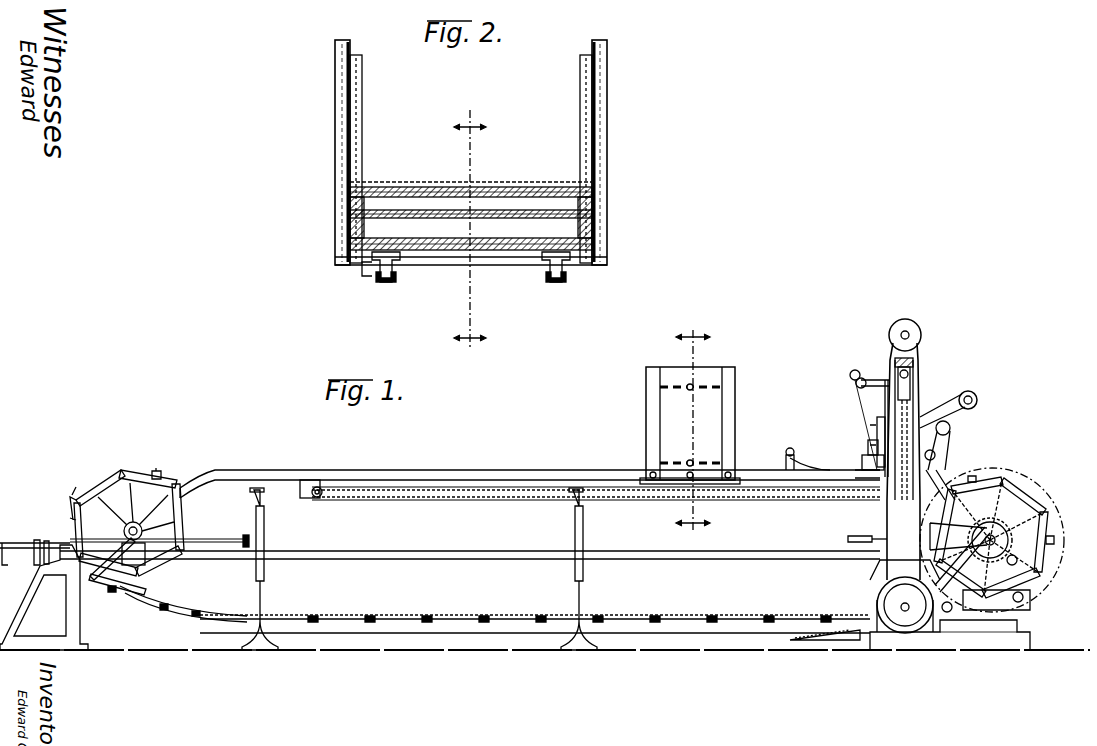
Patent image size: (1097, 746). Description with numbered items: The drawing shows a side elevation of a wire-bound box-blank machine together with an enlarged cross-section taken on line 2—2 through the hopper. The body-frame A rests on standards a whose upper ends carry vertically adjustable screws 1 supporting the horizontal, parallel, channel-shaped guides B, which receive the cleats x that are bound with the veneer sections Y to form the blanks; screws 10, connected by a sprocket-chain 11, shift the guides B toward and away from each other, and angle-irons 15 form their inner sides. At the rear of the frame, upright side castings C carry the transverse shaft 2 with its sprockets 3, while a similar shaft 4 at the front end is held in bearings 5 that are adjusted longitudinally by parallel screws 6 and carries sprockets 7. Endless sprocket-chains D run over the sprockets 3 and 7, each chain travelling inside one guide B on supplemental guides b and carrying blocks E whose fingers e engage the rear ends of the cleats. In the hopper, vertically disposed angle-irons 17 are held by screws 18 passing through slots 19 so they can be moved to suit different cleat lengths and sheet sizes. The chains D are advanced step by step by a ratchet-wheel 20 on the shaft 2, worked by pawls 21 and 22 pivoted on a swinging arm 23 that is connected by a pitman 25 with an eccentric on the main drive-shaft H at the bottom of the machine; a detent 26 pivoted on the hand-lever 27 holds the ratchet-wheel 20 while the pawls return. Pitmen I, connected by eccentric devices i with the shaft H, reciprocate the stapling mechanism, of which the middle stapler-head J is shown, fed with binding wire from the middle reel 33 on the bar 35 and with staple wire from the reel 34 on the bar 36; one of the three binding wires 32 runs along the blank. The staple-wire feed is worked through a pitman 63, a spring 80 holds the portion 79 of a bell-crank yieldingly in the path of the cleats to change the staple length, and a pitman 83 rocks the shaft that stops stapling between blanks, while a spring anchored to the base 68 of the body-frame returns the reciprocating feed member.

In FIG. 1, the vertically adjustable screws 1 is at (262, 497).
In FIG. 1, the transverse shaft 2 is at (1032, 462).
In FIG. 1, the sprockets 3 is at (1030, 585).
In FIG. 2, the front shaft 4 is at (466, 108).
In FIG. 1, the bearings 5 is at (132, 566).
In FIG. 1, the parallel screws 6 is at (227, 544).
In FIG. 1, the sprockets 7 is at (165, 490).
In FIG. 1, the screws 10 is at (886, 510).
In FIG. 1, the sprocket-chain 11 is at (418, 500).
In FIG. 2, the angle-irons 15 is at (360, 266).
In FIG. 2, the vertically disposed angle-irons 17 is at (362, 128).
In FIG. 1, the screws 18 is at (646, 410).
In FIG. 1, the slots 19 is at (705, 463).
In FIG. 1, the ratchet-wheel 20 is at (1035, 505).
In FIG. 1, the ratchet-dog or pawl 21 is at (952, 644).
In FIG. 1, the ratchet-dog or pawl 22 is at (1040, 575).
In FIG. 1, the arm 23 is at (1020, 603).
In FIG. 1, the pitman 25 is at (966, 612).
In FIG. 1, the detent 26 is at (983, 533).
In FIG. 1, the hand-lever 27 is at (848, 539).
In FIG. 1, the binding wire 32 is at (876, 350).
In FIG. 1, the middle reel 33 is at (903, 320).
In FIG. 1, the reel 34 is at (978, 398).
In FIG. 1, the shaft or round bar 35 is at (910, 330).
In FIG. 1, the shaft or round bar 36 is at (981, 386).
In FIG. 1, the pitman 63 is at (951, 450).
In FIG. 1, the base of the body-frame 68 is at (900, 620).
In FIG. 1, the end portion of bell-crank-lever 79 is at (948, 470).
In FIG. 1, the spring 80 is at (935, 525).
In FIG. 1, the pitman 83 is at (868, 447).
In FIG. 2, the standards a is at (340, 74).
In FIG. 1, the standards a is at (140, 532).
In FIG. 2, the supplemental guides b is at (386, 282).
In FIG. 2, the fingers e is at (358, 262).
In FIG. 1, the eccentric devices i is at (900, 600).
In FIG. 2, the cleats x is at (330, 195).
In FIG. 1, the body-frame A is at (455, 556).
In FIG. 2, the guides B is at (345, 262).
In FIG. 1, the guides B is at (498, 470).
In FIG. 1, the upright side castings C is at (850, 500).
In FIG. 2, the endless sprocket-chains or belts D is at (400, 268).
In FIG. 1, the endless sprocket-chains or belts D is at (358, 614).
In FIG. 2, the blocks E is at (366, 278).
In FIG. 1, the main drive-shaft H is at (908, 612).
In FIG. 1, the pitmen I is at (908, 418).
In FIG. 1, the middle stapler-head J is at (876, 440).
In FIG. 2, the sections Y is at (350, 205).